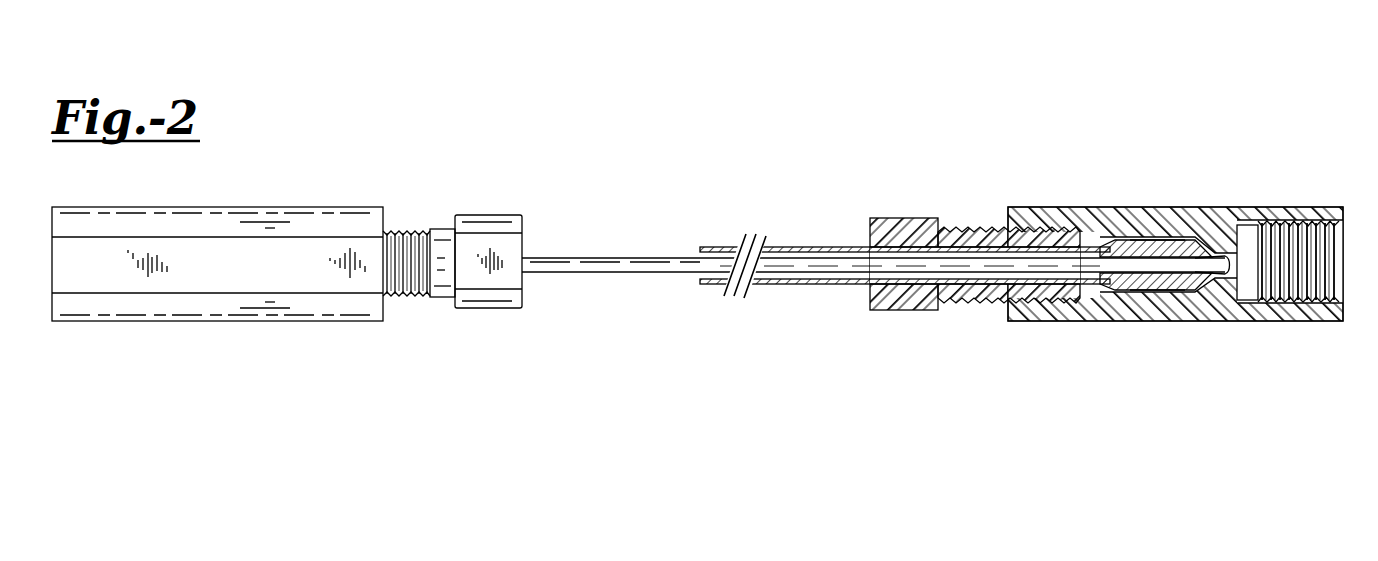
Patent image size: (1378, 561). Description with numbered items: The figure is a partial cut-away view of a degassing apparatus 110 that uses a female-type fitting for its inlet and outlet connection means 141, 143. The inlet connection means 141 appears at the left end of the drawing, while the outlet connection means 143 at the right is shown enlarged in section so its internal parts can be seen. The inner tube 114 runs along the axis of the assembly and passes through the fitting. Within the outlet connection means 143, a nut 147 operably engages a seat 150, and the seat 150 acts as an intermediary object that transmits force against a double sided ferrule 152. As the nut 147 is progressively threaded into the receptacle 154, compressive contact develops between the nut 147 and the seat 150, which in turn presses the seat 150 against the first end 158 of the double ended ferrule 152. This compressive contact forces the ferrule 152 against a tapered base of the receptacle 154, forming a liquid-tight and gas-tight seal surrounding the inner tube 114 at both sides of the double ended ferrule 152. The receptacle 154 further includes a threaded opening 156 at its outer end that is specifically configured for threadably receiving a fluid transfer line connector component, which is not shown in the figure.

The apparatus 110 is at (921, 186).
The inner tube 114 is at (814, 246).
The inlet connection means 141 is at (222, 324).
The outlet connection means 143 is at (1290, 203).
The nut 147 is at (893, 310).
The seat 150 is at (1028, 321).
The double sided ferrule 152 is at (1178, 292).
The receptacle 154 is at (1096, 207).
The threaded opening 156 is at (1332, 303).
The first end 158 is at (1108, 292).